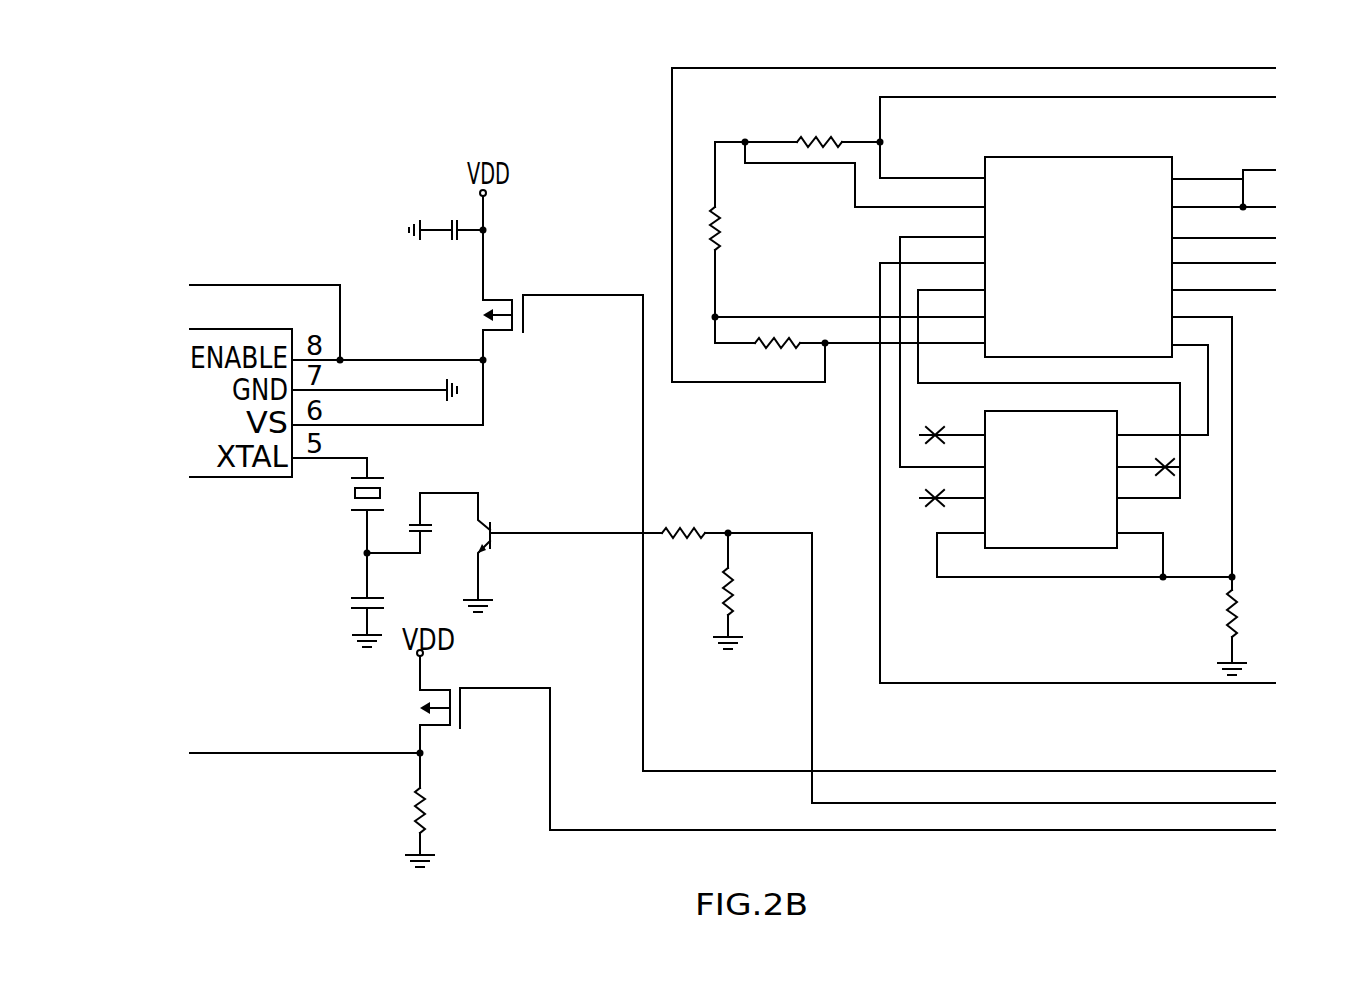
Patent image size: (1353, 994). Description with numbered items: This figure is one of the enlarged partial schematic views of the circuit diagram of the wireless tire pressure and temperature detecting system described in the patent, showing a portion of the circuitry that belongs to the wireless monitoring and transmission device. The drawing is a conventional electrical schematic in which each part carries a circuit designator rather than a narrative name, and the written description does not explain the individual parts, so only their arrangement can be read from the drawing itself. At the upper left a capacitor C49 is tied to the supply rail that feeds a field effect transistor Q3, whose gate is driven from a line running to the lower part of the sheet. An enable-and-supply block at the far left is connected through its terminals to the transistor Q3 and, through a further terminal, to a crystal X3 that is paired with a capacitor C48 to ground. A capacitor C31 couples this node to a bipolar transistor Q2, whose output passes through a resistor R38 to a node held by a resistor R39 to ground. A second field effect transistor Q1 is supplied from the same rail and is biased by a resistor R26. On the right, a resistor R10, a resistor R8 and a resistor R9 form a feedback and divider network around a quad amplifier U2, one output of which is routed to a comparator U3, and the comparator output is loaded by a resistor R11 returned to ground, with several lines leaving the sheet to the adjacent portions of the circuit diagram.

The capacitor 68n/X7R C49 is at (423, 233).
The P-channel MOSFET FDN304P Q3 is at (563, 343).
The crystal X3 is at (305, 535).
The capacitor 2.2p C48 is at (341, 608).
The capacitor 10p C31 is at (422, 523).
The transistor HMBTH10-B Q2 is at (548, 552).
The resistor 100K R38 is at (651, 534).
The resistor 100K R39 is at (757, 591).
The P-channel MOSFET FDN304P Q1 is at (484, 722).
The resistor 100K R26 is at (393, 825).
The resistor 510K R10 is at (799, 125).
The resistor 100K R8 is at (748, 242).
The resistor 510K R9 is at (850, 361).
The quad op-amp LMV934 U2 is at (1110, 256).
The comparator TP30 U3 is at (1078, 480).
The resistor 1K R11 is at (1251, 626).